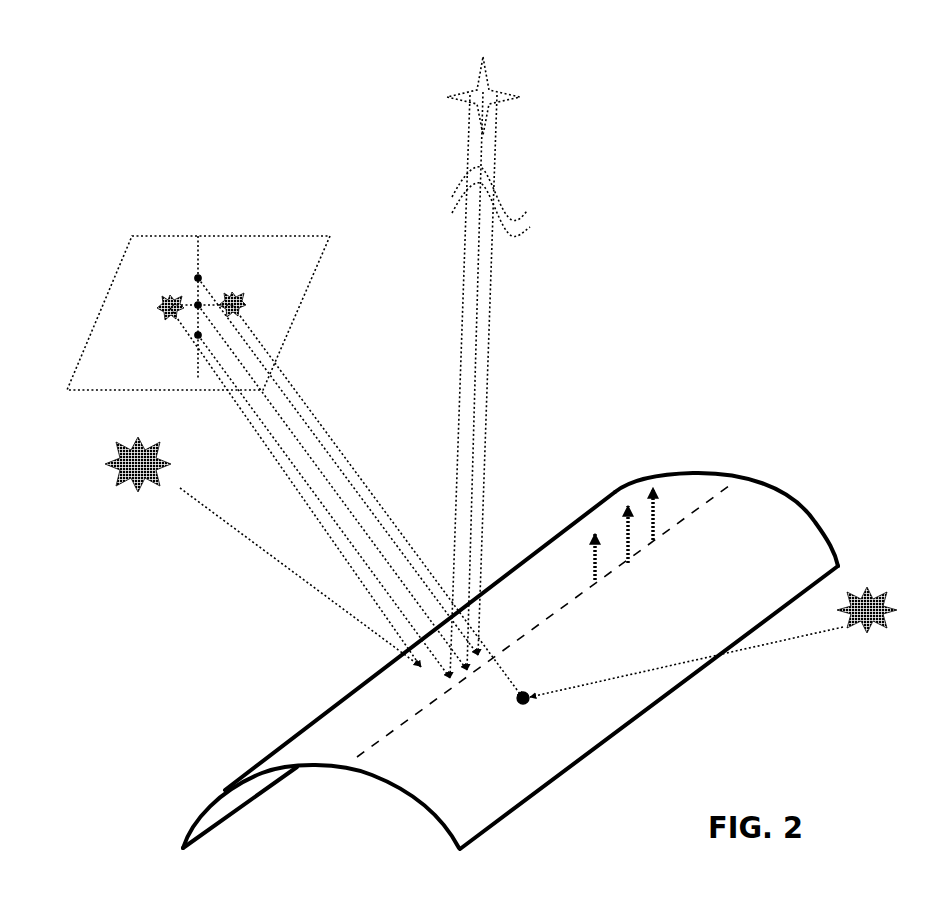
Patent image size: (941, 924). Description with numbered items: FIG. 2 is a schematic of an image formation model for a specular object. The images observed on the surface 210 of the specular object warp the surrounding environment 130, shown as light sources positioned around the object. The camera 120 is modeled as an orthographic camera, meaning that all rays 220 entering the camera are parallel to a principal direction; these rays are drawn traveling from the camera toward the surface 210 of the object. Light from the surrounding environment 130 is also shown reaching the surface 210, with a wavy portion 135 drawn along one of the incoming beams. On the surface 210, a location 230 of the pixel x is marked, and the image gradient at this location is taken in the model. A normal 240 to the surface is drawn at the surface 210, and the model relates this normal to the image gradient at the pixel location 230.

The camera 120 is at (313, 237).
The surrounding environment 130 is at (477, 70).
The light rays 135 is at (512, 211).
The surface 210 is at (815, 516).
The rays 220 is at (363, 483).
The location 230 is at (523, 693).
The normal 240 is at (665, 507).